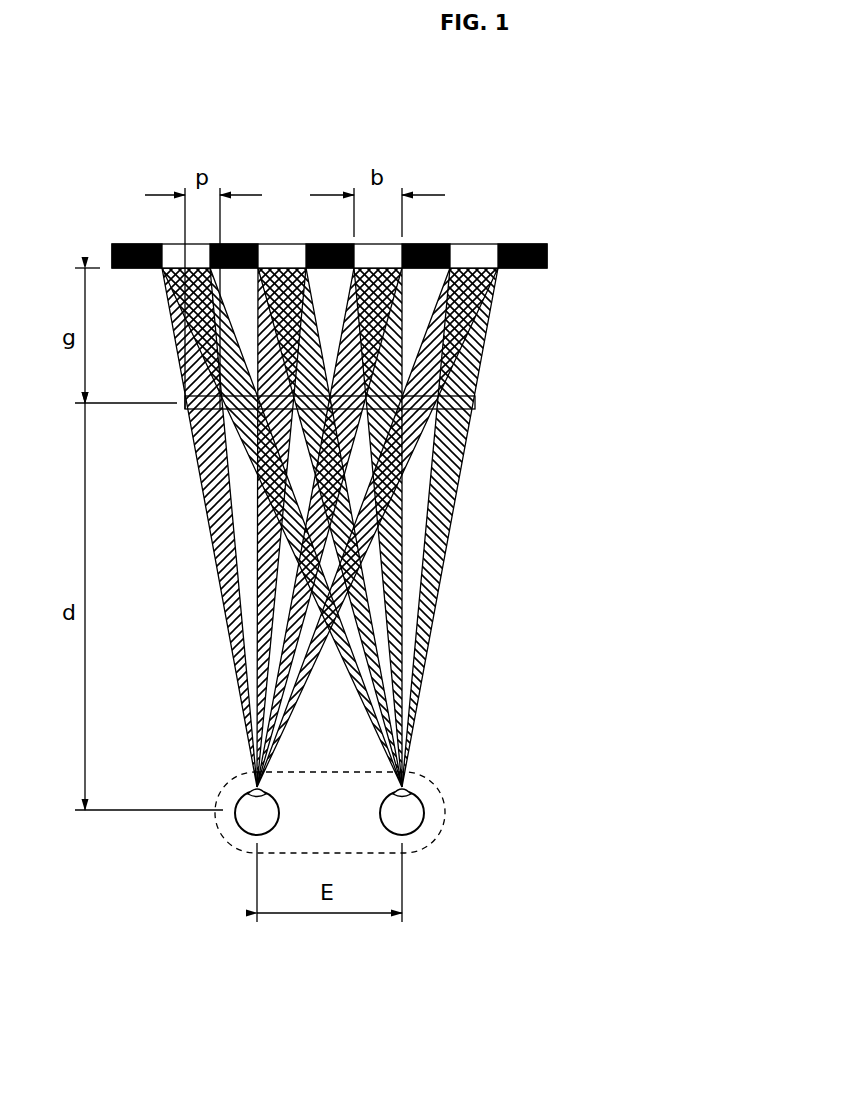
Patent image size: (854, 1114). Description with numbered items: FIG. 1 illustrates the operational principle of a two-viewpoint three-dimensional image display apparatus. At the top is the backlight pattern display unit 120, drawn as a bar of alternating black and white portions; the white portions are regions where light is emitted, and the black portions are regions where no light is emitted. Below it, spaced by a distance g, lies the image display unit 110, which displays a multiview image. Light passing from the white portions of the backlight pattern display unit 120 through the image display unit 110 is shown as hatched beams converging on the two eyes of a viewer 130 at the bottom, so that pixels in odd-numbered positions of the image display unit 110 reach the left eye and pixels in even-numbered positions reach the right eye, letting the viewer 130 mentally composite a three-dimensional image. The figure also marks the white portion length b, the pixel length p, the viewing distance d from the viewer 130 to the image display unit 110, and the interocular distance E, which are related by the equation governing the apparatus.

The backlight pattern display unit 120 is at (547, 256).
The image display unit 110 is at (475, 402).
The viewer 130 is at (437, 789).